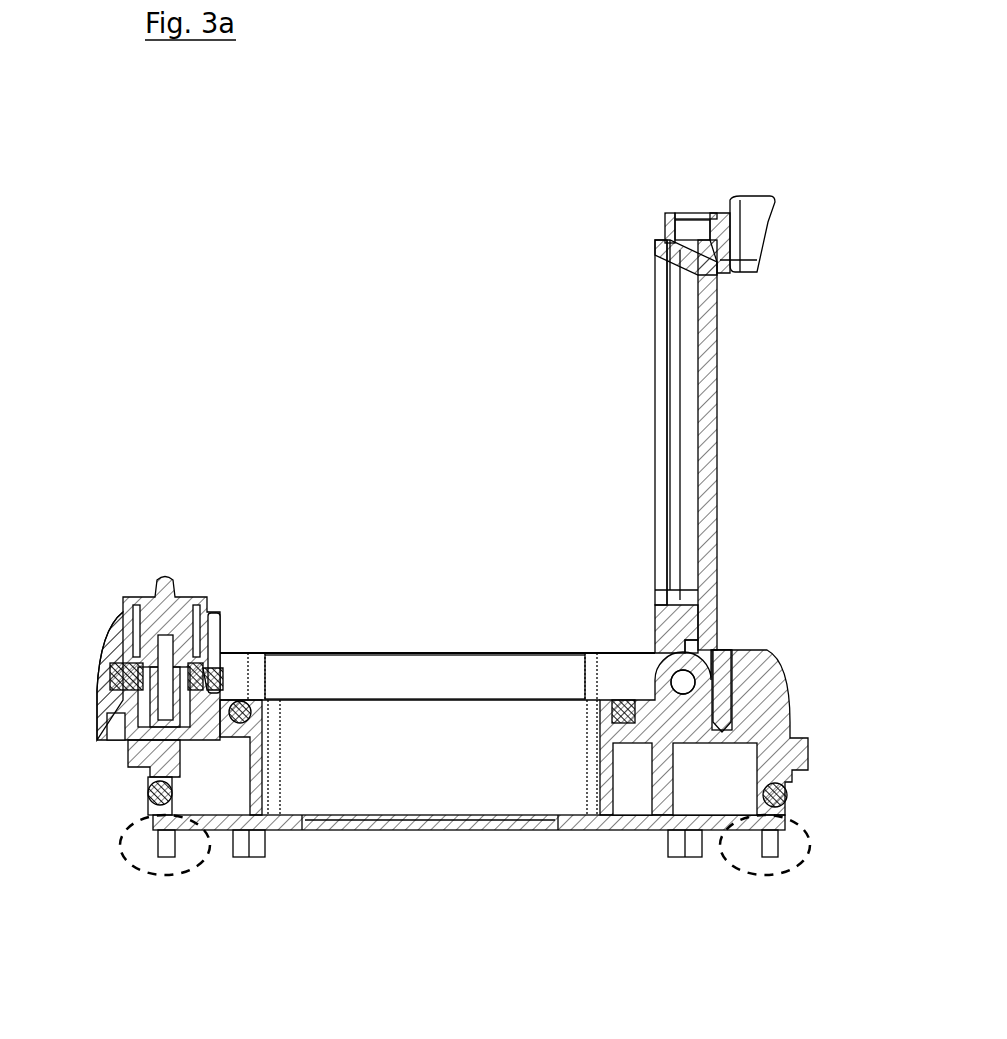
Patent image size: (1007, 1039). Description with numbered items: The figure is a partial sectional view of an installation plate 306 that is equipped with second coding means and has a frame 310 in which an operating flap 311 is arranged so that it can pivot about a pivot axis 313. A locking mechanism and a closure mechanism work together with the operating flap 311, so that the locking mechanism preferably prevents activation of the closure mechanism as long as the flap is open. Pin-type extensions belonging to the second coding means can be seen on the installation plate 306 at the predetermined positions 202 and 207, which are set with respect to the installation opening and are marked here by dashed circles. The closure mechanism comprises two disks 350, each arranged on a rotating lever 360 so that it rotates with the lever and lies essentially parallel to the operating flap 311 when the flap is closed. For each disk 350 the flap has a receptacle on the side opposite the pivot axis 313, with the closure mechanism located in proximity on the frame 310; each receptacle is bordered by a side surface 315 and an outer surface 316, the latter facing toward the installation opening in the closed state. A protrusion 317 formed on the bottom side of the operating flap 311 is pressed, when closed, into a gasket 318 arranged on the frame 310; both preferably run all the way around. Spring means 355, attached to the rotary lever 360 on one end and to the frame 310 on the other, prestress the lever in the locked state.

The installation plate 306 is at (453, 205).
The frame 310 is at (757, 687).
The operating flap 311 is at (714, 503).
The pivot axis 313 is at (684, 688).
The side surface 315 is at (669, 213).
The outer surface 316 is at (636, 228).
The protrusion 317 is at (635, 615).
The gasket 318 is at (600, 692).
The disk 350 is at (110, 670).
The spring means 355 is at (135, 647).
The rotating lever 360 is at (195, 582).
The predetermined position 207 is at (152, 868).
The predetermined position 202 is at (780, 868).